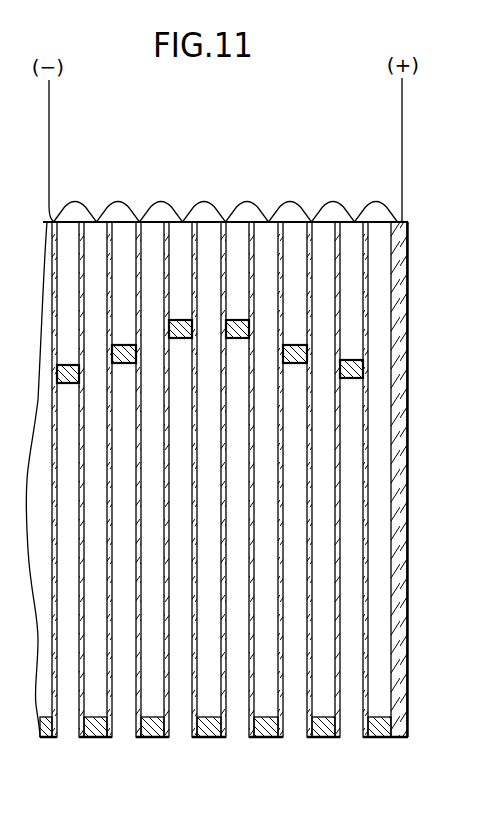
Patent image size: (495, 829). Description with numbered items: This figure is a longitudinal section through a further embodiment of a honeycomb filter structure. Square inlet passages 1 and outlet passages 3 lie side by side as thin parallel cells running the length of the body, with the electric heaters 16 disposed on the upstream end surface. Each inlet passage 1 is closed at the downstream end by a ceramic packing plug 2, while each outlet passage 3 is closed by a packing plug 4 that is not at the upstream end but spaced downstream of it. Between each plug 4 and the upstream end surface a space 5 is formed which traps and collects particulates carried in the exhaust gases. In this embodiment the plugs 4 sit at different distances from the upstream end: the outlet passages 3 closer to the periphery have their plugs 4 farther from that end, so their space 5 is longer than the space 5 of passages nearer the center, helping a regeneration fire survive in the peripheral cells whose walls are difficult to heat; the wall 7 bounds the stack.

The inlet passage 1 is at (380, 312).
The ceramic packing plug 2 is at (380, 737).
The outlet passage 3 is at (353, 452).
The packing plug 4 is at (357, 368).
The space 5 is at (352, 255).
The electrode plates 7 is at (368, 410).
The electric heater 16 is at (300, 196).